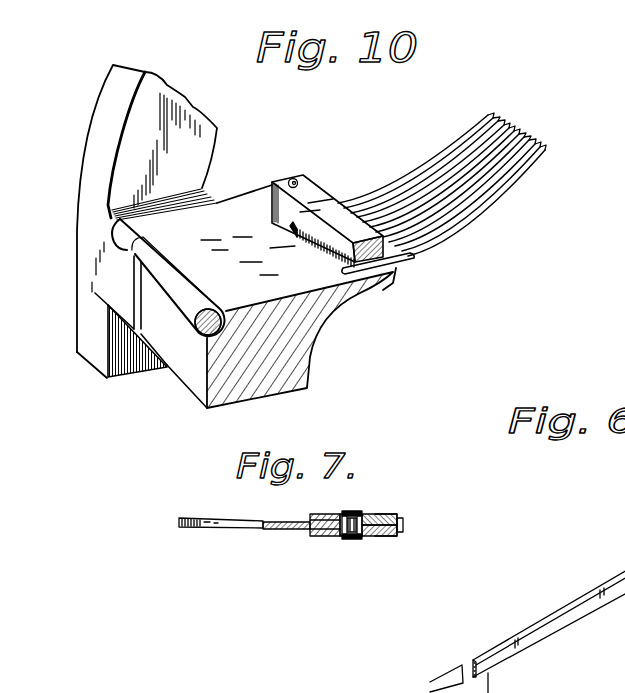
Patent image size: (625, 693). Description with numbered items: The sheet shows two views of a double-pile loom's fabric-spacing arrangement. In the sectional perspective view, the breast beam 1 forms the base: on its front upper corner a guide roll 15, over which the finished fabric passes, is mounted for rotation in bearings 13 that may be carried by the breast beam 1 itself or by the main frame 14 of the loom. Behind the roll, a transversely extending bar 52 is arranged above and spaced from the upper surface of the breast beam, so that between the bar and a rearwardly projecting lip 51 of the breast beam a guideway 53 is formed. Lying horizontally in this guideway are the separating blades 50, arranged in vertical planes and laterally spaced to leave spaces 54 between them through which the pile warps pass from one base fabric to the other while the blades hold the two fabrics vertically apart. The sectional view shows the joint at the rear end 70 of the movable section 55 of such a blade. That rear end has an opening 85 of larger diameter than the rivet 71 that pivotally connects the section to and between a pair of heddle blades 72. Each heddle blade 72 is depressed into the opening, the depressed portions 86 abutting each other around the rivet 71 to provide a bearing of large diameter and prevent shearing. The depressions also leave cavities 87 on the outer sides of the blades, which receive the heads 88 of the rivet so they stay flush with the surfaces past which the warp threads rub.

In FIG. 10, the breast beam 1 is at (310, 362).
In FIG. 10, the bearings 13 is at (77, 181).
In FIG. 10, the main frame 14 is at (123, 243).
In FIG. 10, the guide roll 15 is at (172, 290).
In FIG. 10, the separating blade 50 is at (343, 270).
In FIG. 10, the rearwardly projecting lip 51 is at (385, 289).
In FIG. 10, the transversely extending bar 52 is at (332, 204).
In FIG. 10, the guideway 53 is at (292, 228).
In FIG. 10, the spaces 54 is at (307, 247).
In FIG. 7, the movable section 55 is at (233, 528).
In FIG. 7, the rear end 70 is at (404, 524).
In FIG. 7, the rivet 71 is at (352, 537).
In FIG. 7, the heddle blade 72 is at (315, 515).
In FIG. 7, the opening 85 is at (385, 536).
In FIG. 7, the depressed portion 86 is at (344, 514).
In FIG. 7, the cavity 87 is at (374, 514).
In FIG. 7, the head 88 is at (357, 513).